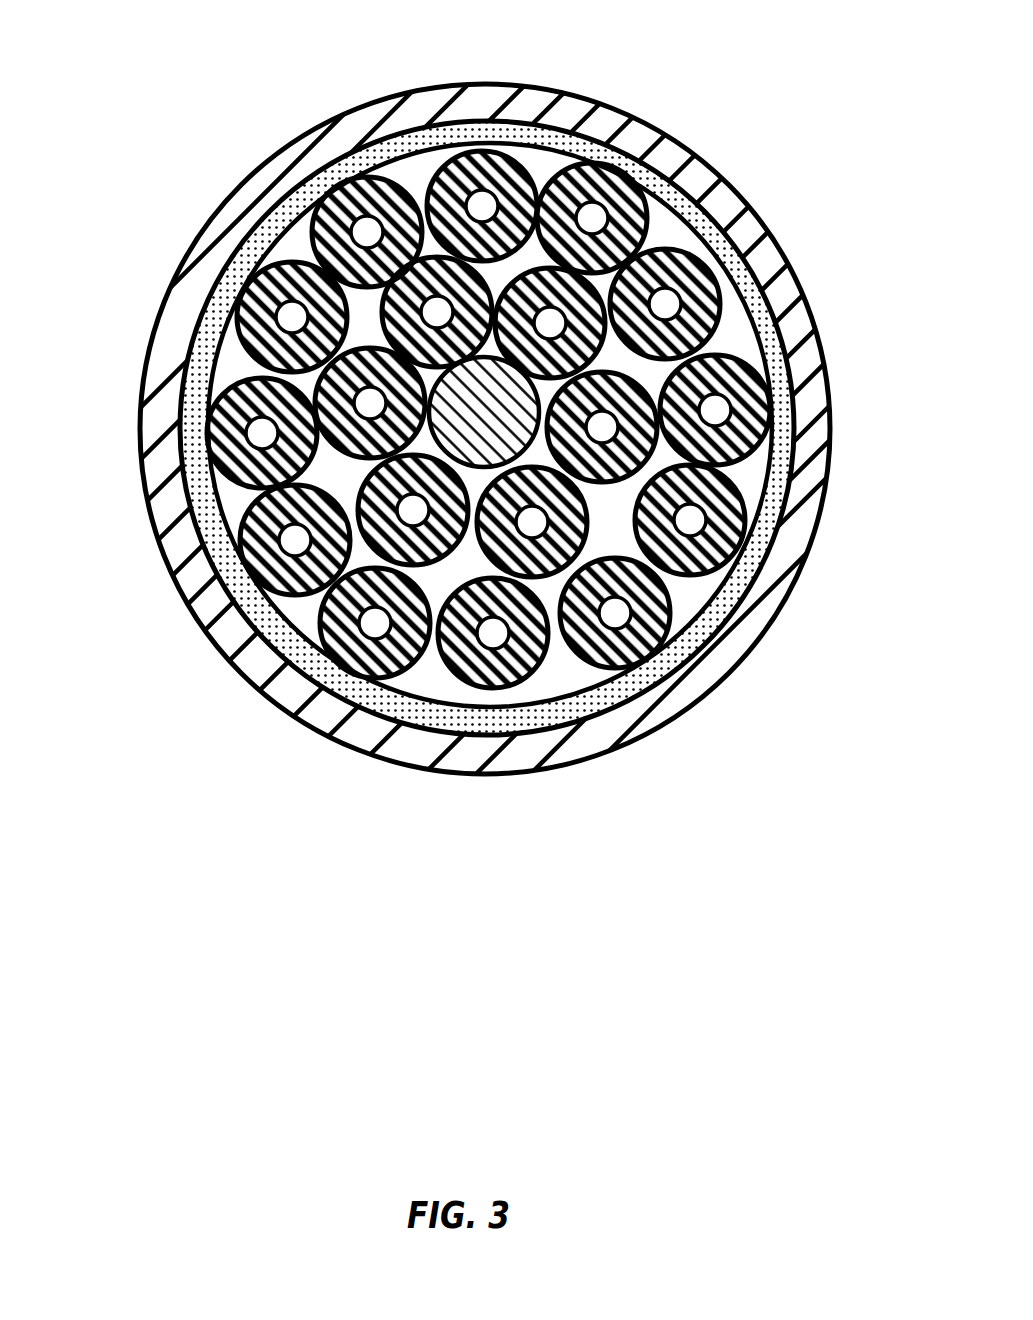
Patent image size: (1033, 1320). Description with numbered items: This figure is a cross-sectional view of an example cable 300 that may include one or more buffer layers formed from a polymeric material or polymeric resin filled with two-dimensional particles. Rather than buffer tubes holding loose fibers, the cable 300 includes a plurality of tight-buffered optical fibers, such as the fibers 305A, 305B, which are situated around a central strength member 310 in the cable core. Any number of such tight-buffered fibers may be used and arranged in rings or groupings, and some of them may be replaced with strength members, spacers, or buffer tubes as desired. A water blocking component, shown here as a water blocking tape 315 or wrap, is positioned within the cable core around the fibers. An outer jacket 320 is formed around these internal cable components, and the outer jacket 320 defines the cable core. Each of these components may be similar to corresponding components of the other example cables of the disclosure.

The cable 300 is at (502, 474).
The tight-buffered optical fiber 305A is at (557, 167).
The tight-buffered optical fiber 305B is at (307, 243).
The central strength member 310 is at (490, 400).
The water blocking tape 315 is at (782, 392).
The outer jacket 320 is at (665, 122).